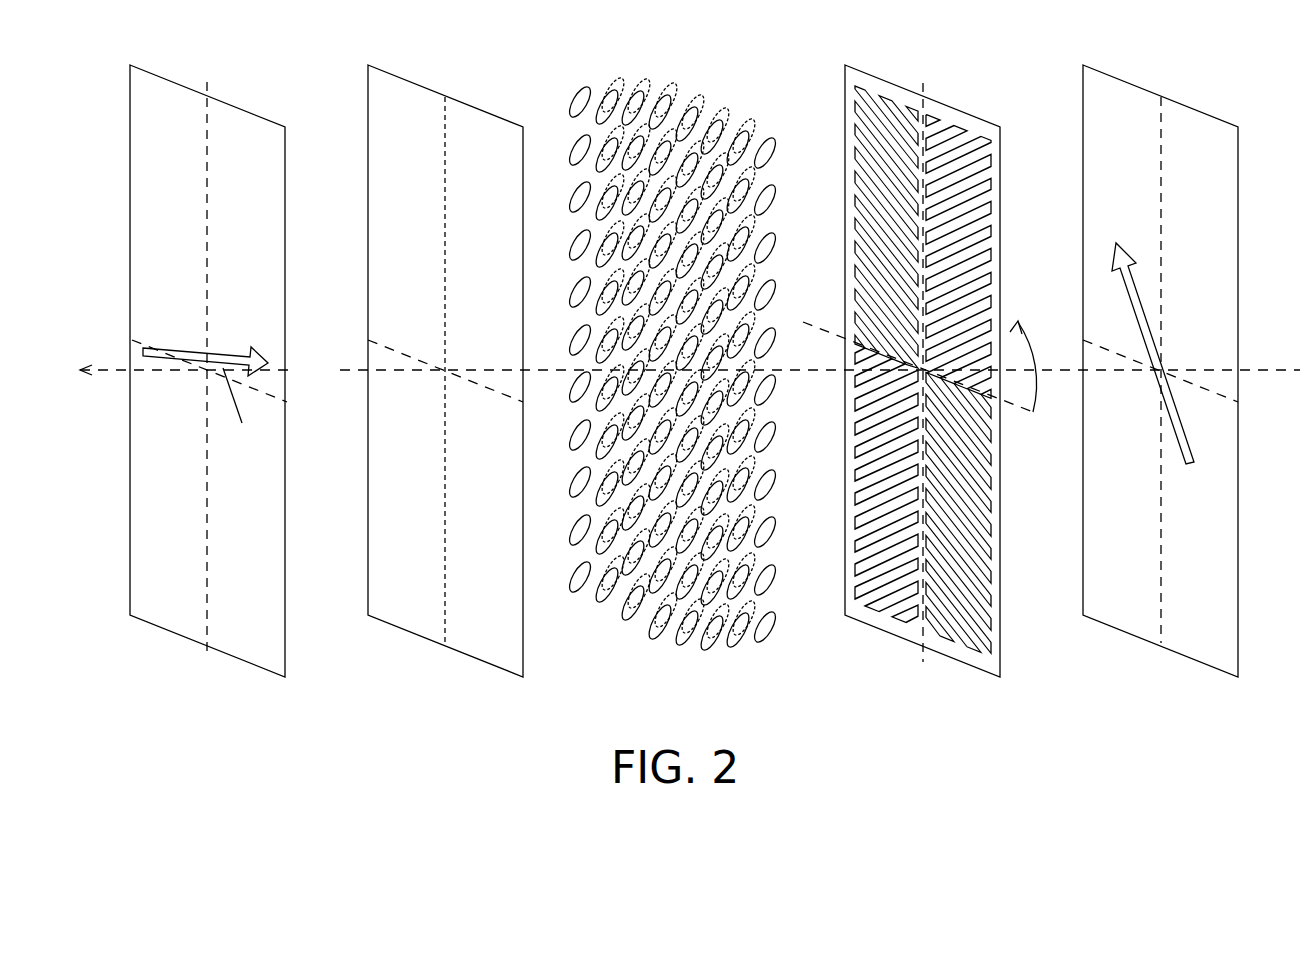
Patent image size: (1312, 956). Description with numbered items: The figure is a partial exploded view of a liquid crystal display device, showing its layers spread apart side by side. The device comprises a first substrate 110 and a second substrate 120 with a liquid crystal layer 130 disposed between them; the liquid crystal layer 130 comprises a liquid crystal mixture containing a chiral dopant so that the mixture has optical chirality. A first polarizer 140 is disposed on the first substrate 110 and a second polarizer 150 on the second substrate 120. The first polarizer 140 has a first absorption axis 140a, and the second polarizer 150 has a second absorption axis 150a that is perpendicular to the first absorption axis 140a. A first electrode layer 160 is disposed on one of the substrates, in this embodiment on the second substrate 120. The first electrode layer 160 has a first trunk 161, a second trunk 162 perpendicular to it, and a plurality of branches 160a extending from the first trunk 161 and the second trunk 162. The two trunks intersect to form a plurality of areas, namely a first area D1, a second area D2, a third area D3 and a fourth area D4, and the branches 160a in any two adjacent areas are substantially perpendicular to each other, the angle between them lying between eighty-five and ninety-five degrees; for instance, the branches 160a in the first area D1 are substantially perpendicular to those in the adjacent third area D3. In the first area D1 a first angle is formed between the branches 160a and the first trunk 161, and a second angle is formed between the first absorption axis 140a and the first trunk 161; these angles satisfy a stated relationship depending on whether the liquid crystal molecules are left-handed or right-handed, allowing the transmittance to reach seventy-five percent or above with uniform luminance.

The first substrate 110 is at (483, 660).
The second substrate 120 is at (1000, 190).
The liquid crystal layer 130 is at (657, 645).
The first polarizer 140 is at (254, 114).
The first absorption axis 140a is at (177, 350).
The second polarizer 150 is at (1198, 660).
The second absorption axis 150a is at (1110, 252).
The first electrode layer 160 is at (923, 350).
The branches 160a is at (958, 199).
The first trunk 161 is at (886, 356).
The second trunk 162 is at (958, 385).
The first area D1 is at (958, 256).
The second area D2 is at (886, 227).
The third area D3 is at (886, 485).
The fourth area D4 is at (958, 514).